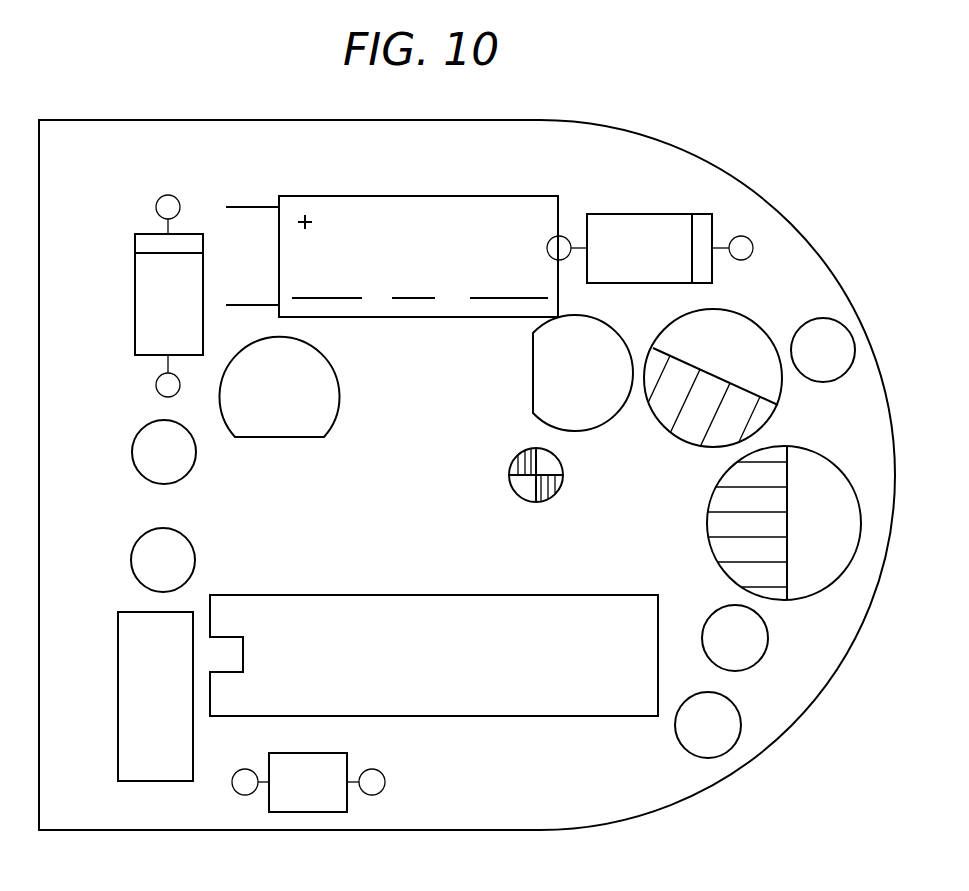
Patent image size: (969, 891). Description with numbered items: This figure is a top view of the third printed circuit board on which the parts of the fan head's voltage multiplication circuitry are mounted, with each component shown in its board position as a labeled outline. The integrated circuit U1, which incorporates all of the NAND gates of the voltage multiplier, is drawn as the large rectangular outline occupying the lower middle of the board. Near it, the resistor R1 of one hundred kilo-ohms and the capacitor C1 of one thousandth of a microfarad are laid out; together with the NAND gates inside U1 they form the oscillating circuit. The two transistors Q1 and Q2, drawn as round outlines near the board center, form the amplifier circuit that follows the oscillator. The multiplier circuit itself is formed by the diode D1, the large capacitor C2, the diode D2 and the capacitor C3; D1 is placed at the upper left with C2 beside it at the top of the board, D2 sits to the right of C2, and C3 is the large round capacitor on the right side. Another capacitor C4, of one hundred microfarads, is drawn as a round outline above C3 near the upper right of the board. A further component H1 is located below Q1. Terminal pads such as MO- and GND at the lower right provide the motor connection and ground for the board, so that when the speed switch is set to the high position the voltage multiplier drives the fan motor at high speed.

The diode D1 is at (169, 296).
The capacitor C2 is at (406, 238).
The diode D2 is at (670, 248).
The capacitor C4 is at (713, 367).
The capacitor C3 is at (760, 523).
The MO- terminal pad MO- is at (765, 638).
The ground terminal pad GND is at (738, 721).
The transistor Q1 is at (552, 373).
The component H1 is at (515, 475).
The transistor Q2 is at (280, 405).
The capacitor C1 is at (155, 696).
The IC 4069 U1 is at (434, 655).
The resistor R1 is at (308, 782).